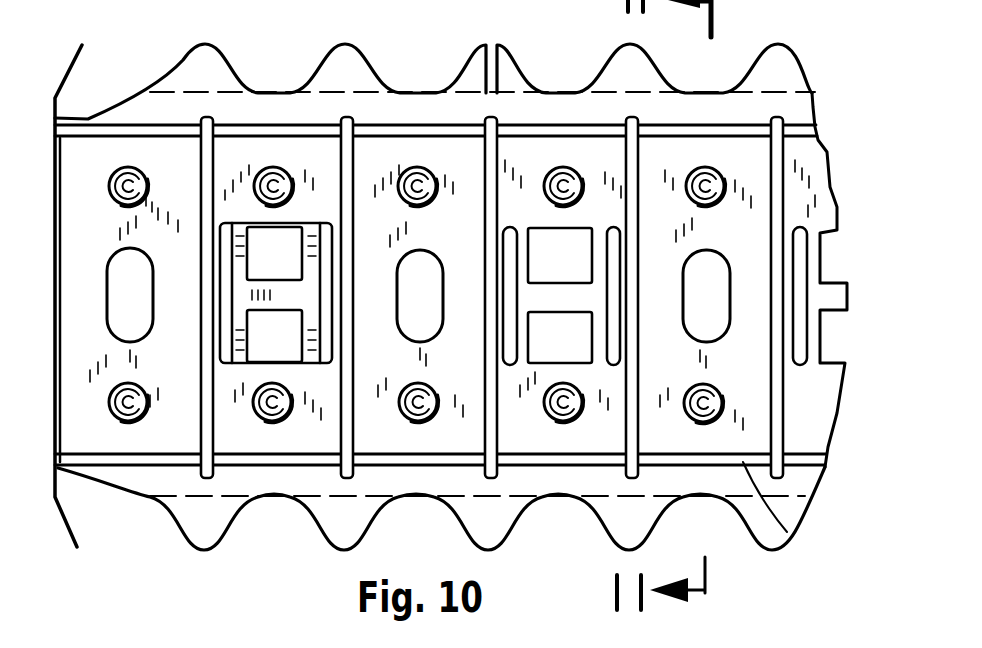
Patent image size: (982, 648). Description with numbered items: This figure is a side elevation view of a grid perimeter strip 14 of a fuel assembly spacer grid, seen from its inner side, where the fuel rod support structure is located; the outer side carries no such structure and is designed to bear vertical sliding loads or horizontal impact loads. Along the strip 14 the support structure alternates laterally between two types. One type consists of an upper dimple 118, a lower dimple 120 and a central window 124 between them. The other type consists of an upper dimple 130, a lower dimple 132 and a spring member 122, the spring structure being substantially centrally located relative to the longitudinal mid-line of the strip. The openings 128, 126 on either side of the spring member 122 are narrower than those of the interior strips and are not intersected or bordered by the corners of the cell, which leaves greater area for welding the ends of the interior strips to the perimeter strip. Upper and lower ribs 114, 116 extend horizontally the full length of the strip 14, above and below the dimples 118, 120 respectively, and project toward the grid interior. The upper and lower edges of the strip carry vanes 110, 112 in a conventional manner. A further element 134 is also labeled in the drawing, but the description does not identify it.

The perimeter strip 14 is at (143, 76).
The vane 110 is at (376, 68).
The vane 112 is at (325, 528).
The upper rib 114 is at (743, 130).
The lower rib 116 is at (788, 531).
The upper dimple 118 is at (722, 175).
The lower dimple 120 is at (717, 390).
The spring member 122 is at (566, 274).
The central window 124 is at (713, 297).
The opening 126 is at (613, 333).
The opening 128 is at (515, 343).
The upper dimple 130 is at (551, 165).
The lower dimple 132 is at (563, 425).
The cross pin 134 is at (352, 158).